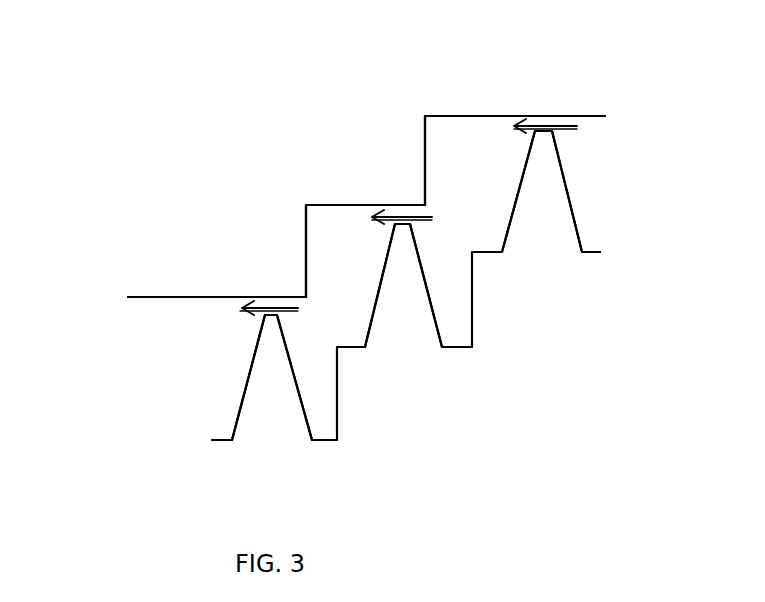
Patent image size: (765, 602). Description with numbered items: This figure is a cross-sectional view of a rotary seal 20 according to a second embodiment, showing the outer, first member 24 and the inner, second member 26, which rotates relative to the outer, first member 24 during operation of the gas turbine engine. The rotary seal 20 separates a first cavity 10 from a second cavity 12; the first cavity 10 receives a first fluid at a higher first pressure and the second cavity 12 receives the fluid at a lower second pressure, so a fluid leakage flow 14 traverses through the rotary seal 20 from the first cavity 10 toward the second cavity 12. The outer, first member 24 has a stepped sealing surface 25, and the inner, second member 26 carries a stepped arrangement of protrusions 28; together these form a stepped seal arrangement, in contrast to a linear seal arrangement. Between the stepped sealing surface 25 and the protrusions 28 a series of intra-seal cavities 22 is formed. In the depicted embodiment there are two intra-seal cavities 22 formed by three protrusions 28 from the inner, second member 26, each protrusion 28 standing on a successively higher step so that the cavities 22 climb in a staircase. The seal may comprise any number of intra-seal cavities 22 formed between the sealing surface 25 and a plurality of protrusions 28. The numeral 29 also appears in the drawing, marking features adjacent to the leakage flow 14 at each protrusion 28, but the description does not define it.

The first cavity 10 is at (615, 212).
The second cavity 12 is at (384, 285).
The fluid leakage flow 14 is at (268, 300).
The rotary seal 20 is at (117, 250).
The intra-seal cavities 22 is at (397, 206).
The outer, first member 24 is at (317, 203).
The stepped sealing surface 25 is at (157, 302).
The inner, second member 26 is at (330, 442).
The protrusions 28 is at (407, 285).
The etched layer 29 is at (285, 300).